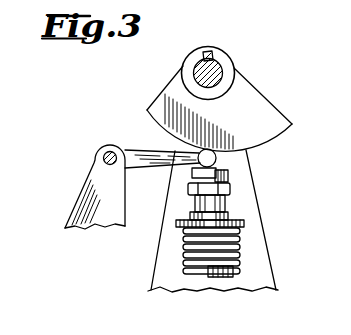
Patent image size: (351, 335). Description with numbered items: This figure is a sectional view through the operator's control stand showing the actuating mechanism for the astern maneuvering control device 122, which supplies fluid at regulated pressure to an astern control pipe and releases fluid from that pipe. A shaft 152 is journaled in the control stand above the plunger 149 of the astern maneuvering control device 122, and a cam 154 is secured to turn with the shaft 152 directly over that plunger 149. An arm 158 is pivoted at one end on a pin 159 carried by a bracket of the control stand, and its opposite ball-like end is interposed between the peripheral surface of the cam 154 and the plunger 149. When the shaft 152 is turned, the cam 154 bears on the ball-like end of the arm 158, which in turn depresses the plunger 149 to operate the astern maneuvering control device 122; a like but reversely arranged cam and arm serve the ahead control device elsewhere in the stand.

The astern maneuvering control device 122 is at (233, 250).
The plunger 149 is at (228, 173).
The shaft 152 is at (213, 57).
The cam 154 is at (265, 108).
The arm 158 is at (142, 157).
The pin 159 is at (107, 149).